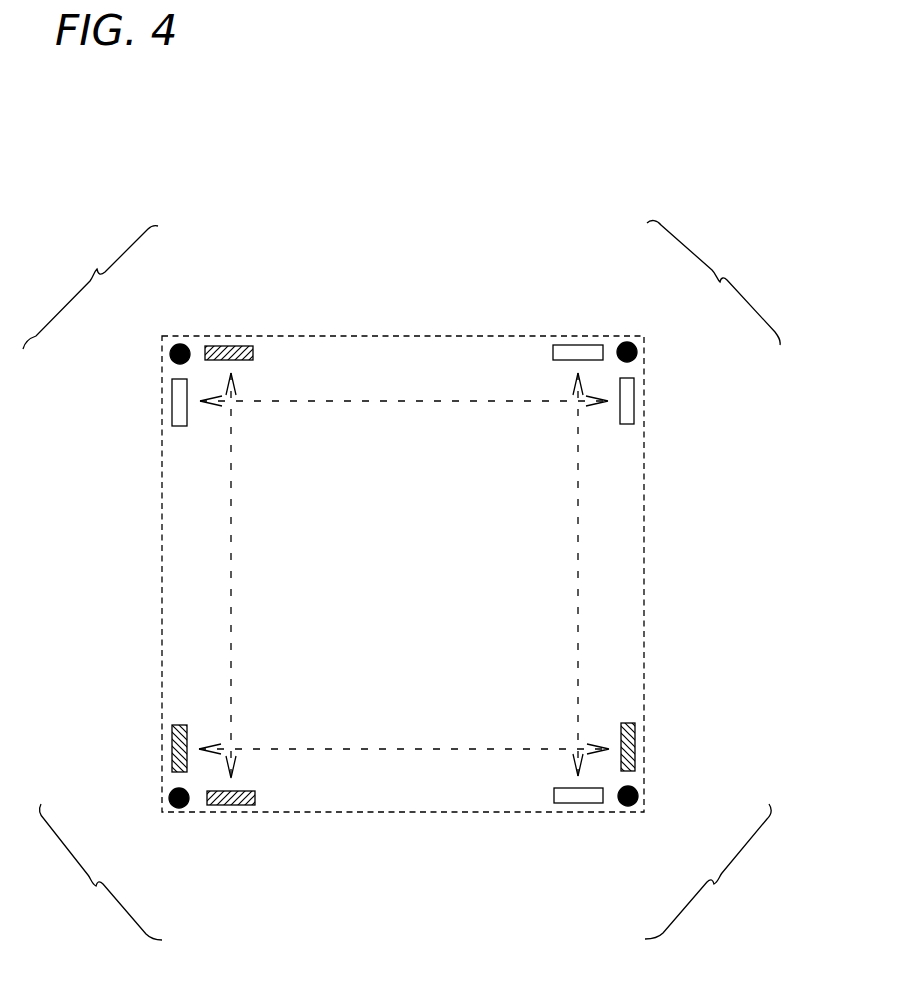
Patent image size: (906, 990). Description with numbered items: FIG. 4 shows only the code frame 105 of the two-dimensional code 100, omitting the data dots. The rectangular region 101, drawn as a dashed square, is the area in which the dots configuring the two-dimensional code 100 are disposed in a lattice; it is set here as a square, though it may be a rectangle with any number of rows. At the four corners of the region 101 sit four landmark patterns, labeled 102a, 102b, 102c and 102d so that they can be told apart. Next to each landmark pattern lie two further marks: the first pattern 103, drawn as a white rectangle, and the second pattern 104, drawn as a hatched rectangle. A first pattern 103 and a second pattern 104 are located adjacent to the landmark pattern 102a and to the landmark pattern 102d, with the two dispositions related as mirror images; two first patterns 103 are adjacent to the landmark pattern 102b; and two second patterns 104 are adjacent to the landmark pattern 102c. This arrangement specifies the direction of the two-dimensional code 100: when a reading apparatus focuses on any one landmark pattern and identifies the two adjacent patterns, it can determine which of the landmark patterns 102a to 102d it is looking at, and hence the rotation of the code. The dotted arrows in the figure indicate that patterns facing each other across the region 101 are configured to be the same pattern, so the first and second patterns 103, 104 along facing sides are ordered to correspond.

The two-dimensional code 100 is at (708, 575).
The rectangular region 101 is at (405, 335).
The landmark pattern 102a is at (173, 346).
The landmark pattern 102b is at (633, 342).
The landmark pattern 102c is at (174, 806).
The landmark pattern 102d is at (633, 805).
The first pattern 103 is at (172, 402).
The second pattern 104 is at (228, 346).
The code frame 105 is at (401, 580).